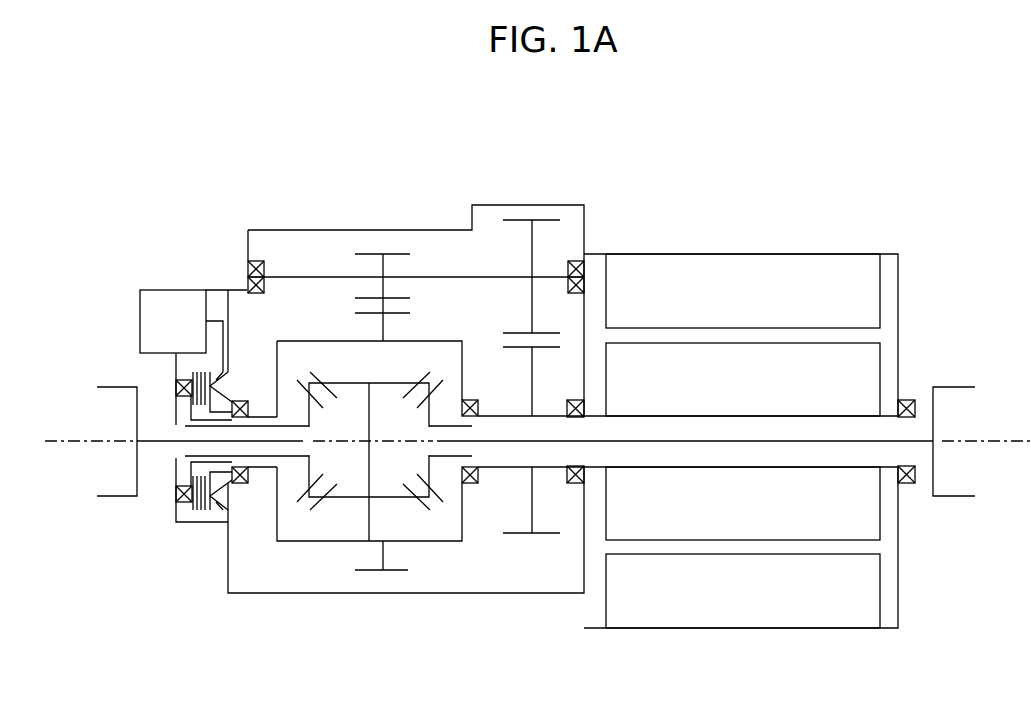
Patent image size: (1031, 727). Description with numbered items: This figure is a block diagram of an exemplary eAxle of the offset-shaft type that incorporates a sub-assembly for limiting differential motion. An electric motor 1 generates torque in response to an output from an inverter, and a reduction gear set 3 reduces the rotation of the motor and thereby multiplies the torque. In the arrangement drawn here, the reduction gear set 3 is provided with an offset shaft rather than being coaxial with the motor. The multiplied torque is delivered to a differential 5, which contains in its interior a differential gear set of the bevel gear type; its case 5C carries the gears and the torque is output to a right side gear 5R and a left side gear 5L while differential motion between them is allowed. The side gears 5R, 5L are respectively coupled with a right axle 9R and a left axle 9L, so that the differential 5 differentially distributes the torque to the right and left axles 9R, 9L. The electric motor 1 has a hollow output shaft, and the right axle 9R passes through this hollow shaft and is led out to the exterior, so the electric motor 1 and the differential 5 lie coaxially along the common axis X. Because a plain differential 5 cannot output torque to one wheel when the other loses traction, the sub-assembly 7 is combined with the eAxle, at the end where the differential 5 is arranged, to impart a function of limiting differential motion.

The electric motor 1 is at (758, 240).
The reduction gear set 3 is at (452, 262).
The differential 5 is at (384, 468).
The differential case 5C is at (288, 340).
The left side gear 5L is at (290, 460).
The right side gear 5R is at (450, 460).
The sub-assembly 7 is at (185, 282).
The left axle 9L is at (112, 497).
The right axle 9R is at (958, 498).
The axis X is at (1008, 440).